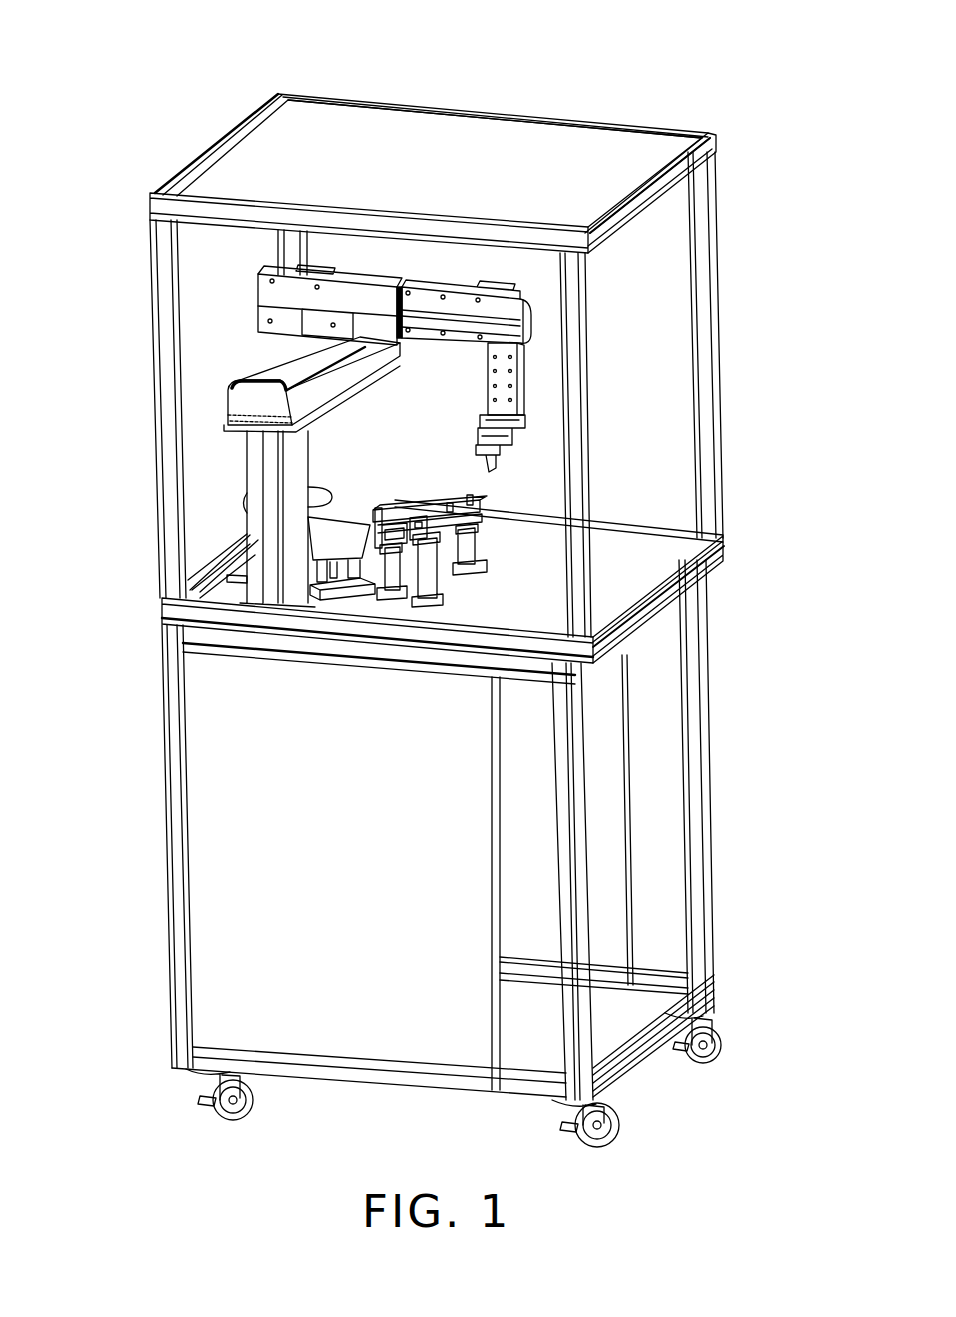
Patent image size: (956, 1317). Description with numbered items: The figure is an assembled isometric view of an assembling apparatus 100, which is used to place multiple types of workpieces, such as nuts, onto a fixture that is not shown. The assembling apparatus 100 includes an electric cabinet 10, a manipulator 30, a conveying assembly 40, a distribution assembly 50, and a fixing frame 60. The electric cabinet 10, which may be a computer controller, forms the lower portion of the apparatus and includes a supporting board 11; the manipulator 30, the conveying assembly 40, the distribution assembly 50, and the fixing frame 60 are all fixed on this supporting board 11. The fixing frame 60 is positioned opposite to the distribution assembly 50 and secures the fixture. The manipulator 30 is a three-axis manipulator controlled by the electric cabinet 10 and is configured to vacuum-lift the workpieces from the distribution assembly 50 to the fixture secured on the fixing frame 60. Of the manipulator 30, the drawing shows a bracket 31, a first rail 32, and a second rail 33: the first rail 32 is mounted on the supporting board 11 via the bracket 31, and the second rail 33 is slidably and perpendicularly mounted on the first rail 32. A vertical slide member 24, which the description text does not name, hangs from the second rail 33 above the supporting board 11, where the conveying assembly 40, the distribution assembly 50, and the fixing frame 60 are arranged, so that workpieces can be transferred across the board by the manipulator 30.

The assembling apparatus 100 is at (452, 37).
The electric cabinet 10 is at (243, 862).
The supporting board 11 is at (637, 563).
The vertical moving module / manipulator 24 is at (507, 363).
The manipulator 30 is at (438, 436).
The bracket 31 is at (262, 477).
The first rail 32 is at (260, 370).
The second rail 33 is at (500, 320).
The conveying assembly 40 is at (330, 532).
The distribution assembly 50 is at (390, 540).
The fixing frame 60 is at (430, 593).